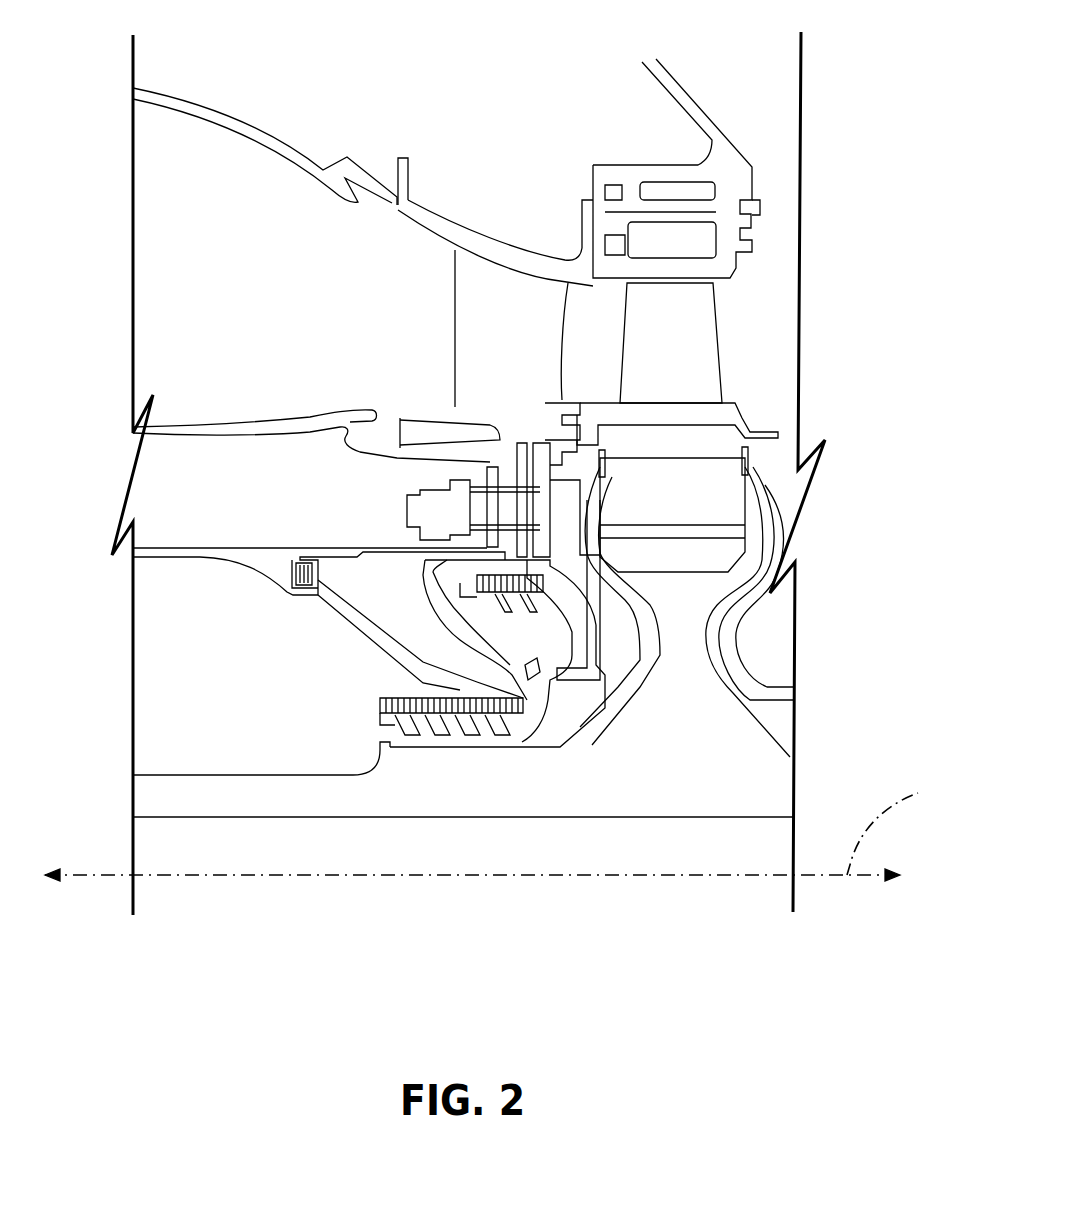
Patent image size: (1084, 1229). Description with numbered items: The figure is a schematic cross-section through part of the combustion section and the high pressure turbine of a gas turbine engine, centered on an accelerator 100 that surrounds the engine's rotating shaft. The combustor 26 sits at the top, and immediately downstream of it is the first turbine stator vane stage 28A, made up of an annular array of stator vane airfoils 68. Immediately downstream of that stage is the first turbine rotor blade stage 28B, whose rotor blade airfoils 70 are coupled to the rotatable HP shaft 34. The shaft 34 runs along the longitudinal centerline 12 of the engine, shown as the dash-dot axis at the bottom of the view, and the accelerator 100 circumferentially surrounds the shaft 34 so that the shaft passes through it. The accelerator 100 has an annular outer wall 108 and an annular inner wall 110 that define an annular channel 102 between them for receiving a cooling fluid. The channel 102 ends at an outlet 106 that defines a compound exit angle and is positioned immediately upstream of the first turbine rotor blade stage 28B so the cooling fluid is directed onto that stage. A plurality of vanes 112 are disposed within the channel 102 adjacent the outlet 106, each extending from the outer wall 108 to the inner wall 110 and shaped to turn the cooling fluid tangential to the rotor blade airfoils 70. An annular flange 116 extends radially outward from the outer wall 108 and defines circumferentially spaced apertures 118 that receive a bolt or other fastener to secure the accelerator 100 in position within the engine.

The longitudinal centerline 12 is at (901, 828).
The combustor 26 is at (250, 92).
The first turbine stator vane stage 28A is at (505, 195).
The first turbine rotor blade stage 28B is at (762, 250).
The HP shaft 34 is at (245, 796).
The stator vane airfoils 68 is at (478, 350).
The rotor blade airfoils 70 is at (697, 348).
The accelerator 100 is at (316, 633).
The annular channel 102 is at (370, 594).
The outlet 106 is at (530, 697).
The annular outer wall 108 is at (457, 637).
The annular inner wall 110 is at (378, 627).
The vanes 112 is at (502, 680).
The annular flange 116 is at (520, 472).
The apertures 118 is at (556, 462).